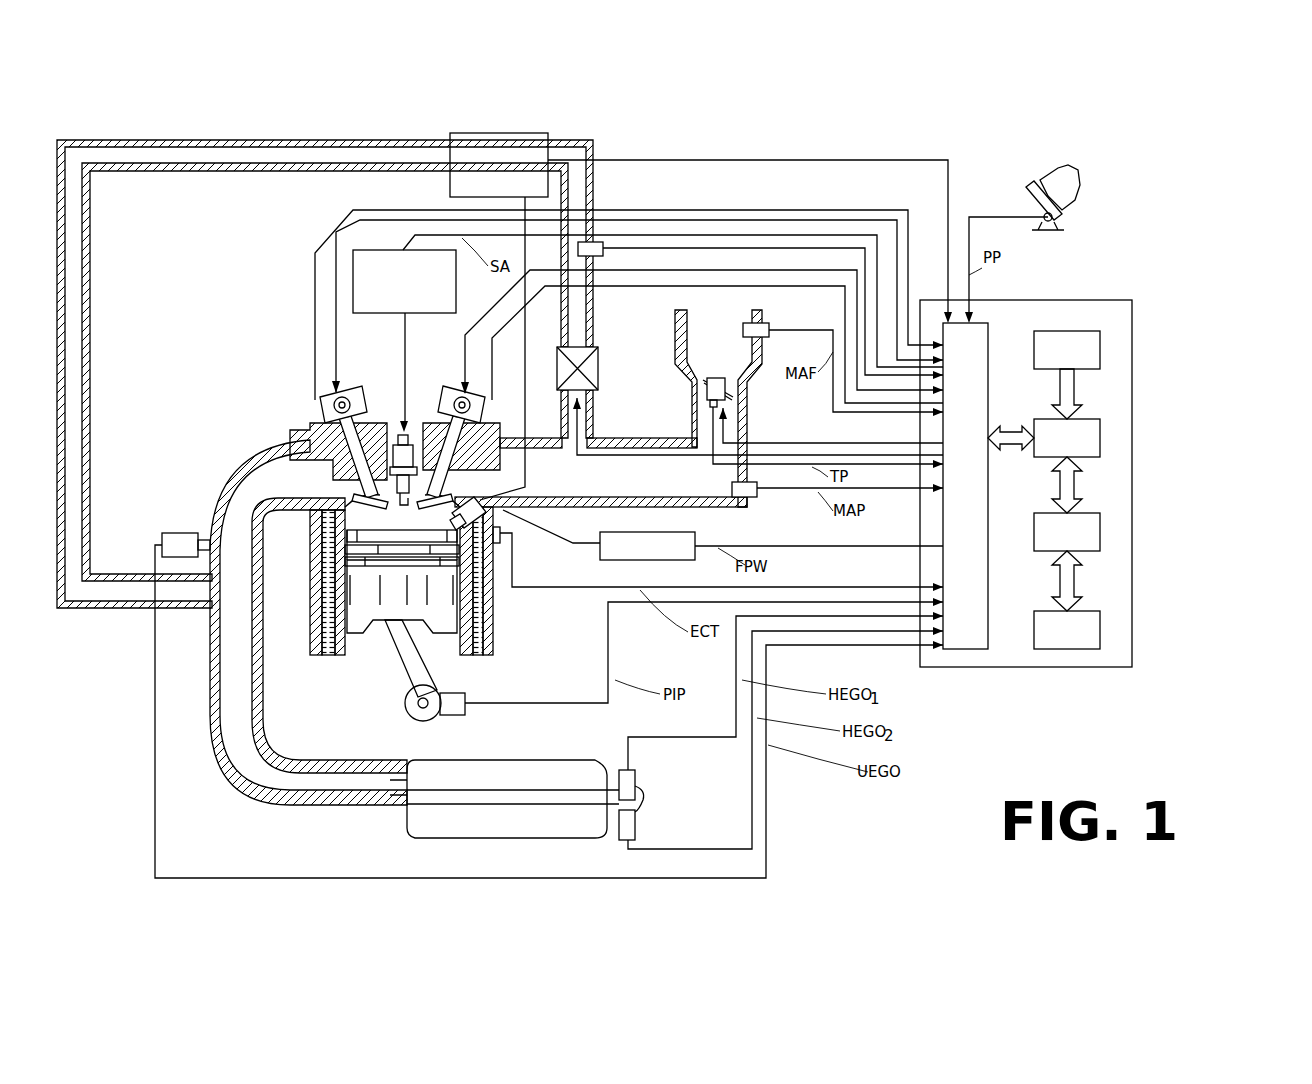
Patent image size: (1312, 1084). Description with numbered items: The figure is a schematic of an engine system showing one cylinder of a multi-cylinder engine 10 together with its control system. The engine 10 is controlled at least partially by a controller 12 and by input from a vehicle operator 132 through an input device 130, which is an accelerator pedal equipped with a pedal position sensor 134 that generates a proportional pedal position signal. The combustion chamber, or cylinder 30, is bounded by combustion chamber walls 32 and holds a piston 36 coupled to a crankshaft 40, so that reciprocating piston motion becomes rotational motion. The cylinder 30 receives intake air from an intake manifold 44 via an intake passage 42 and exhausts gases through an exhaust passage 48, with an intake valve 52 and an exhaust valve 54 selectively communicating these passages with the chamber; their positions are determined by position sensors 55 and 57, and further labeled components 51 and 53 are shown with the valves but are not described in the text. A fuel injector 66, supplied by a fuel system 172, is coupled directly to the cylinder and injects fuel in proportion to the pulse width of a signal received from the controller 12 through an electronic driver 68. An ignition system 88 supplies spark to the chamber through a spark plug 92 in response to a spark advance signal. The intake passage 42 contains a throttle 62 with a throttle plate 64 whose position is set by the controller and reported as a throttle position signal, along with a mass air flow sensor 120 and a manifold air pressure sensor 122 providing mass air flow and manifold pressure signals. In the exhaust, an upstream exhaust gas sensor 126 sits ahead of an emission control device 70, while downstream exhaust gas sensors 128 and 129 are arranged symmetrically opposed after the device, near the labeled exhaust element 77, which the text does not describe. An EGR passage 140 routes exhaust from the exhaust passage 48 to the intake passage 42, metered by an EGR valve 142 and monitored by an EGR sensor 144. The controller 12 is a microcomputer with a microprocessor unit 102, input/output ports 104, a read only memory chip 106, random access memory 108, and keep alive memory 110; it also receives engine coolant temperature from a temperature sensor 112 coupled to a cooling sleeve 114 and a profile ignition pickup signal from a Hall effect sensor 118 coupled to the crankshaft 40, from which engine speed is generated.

The engine 10 is at (243, 375).
The controller 12 is at (1061, 473).
The combustion chamber 30 is at (322, 616).
The combustion chamber walls 32 is at (347, 650).
The piston 36 is at (388, 625).
The crankshaft 40 is at (410, 720).
The intake passage 42 is at (718, 408).
The intake manifold 44 is at (601, 472).
The exhaust passage 48 is at (308, 622).
The intake valve actuator 51 is at (457, 392).
The intake valve 52 is at (466, 449).
The exhaust valve actuator 53 is at (352, 392).
The exhaust valve 54 is at (330, 439).
The position sensor 55 is at (480, 412).
The position sensor 57 is at (322, 398).
The throttle 62 is at (735, 392).
The throttle plate 64 is at (700, 388).
The fuel injector 66 is at (510, 522).
The electronic driver 68 is at (615, 560).
The emission control device 70 is at (578, 762).
The exhaust pipe 77 is at (648, 800).
The ignition system 88 is at (357, 254).
The spark plug 92 is at (404, 433).
The microprocessor unit 102 is at (1100, 437).
The input/output ports 104 is at (990, 330).
The read only memory chip 106 is at (1100, 348).
The random access memory 108 is at (1100, 532).
The keep alive memory 110 is at (1100, 630).
The temperature sensor 112 is at (502, 545).
The cooling sleeve 114 is at (495, 612).
The Hall effect sensor 118 is at (462, 715).
The mass air flow sensor 120 is at (768, 323).
The manifold air pressure sensor 122 is at (760, 497).
The upstream exhaust gas sensor 126 is at (162, 538).
The downstream exhaust gas sensor 128 is at (638, 776).
The downstream exhaust gas sensor 129 is at (638, 832).
The input device 130 is at (1027, 195).
The vehicle operator 132 is at (1082, 186).
The pedal position sensor 134 is at (1060, 217).
The EGR passage 140 is at (332, 141).
The EGR valve 142 is at (598, 367).
The EGR sensor 144 is at (603, 256).
The fuel system 172 is at (514, 133).